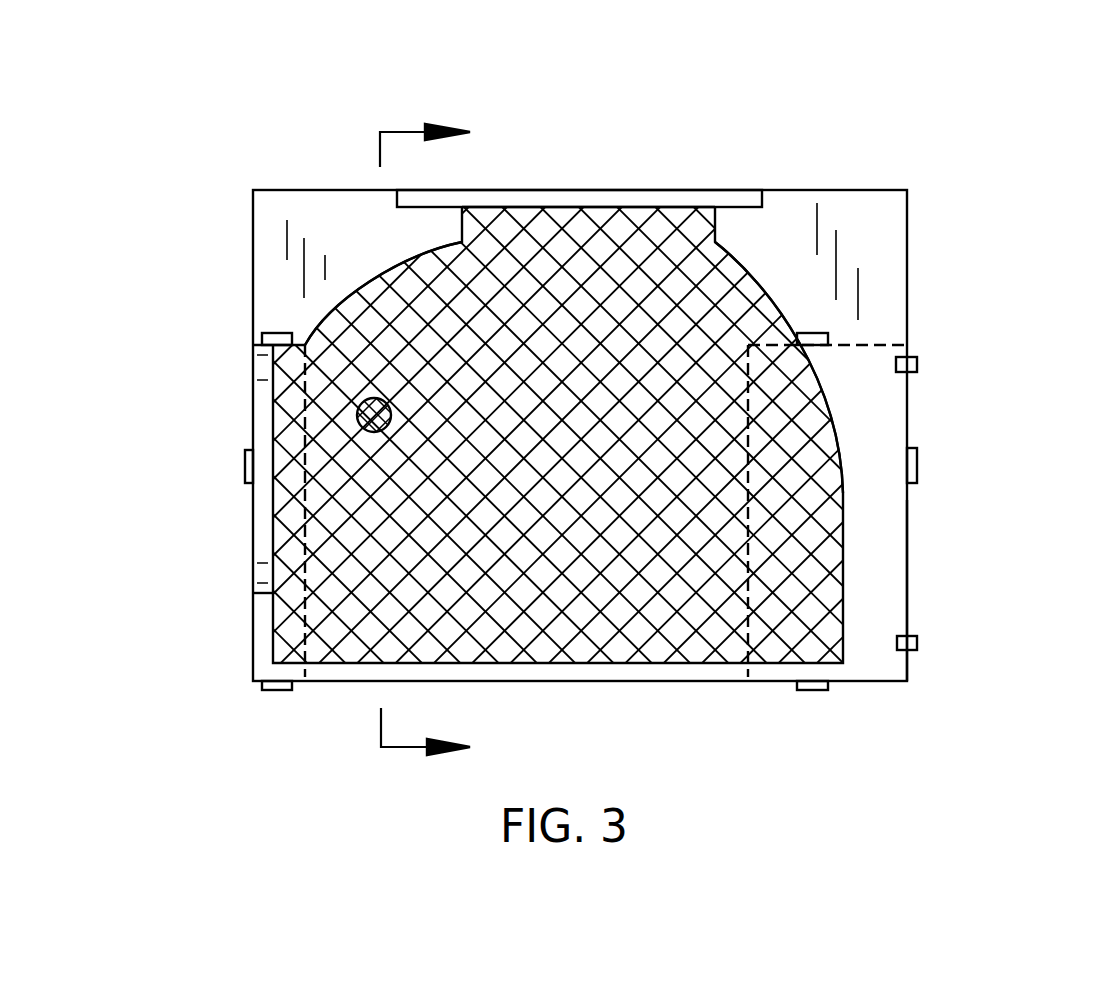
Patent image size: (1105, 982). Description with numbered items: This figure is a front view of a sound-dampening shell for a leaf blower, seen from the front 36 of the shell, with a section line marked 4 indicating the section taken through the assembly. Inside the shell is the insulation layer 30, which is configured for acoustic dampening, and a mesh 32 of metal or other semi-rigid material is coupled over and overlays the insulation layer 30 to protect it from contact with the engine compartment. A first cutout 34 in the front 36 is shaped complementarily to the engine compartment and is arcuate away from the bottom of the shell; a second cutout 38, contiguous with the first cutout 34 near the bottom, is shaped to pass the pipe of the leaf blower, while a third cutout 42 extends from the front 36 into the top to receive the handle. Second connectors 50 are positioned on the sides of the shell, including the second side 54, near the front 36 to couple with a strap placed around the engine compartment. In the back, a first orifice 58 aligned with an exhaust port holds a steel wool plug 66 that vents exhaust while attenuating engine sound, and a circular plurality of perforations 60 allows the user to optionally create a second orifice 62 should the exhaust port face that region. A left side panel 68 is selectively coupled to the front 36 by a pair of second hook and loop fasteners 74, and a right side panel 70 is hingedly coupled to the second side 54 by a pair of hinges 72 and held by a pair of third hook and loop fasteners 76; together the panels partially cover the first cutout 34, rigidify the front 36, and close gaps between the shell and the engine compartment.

The section line 4- 4 is at (431, 439).
The insulation layer 30 is at (642, 590).
The mesh 32 is at (810, 598).
The first cutout 34 is at (665, 290).
The front 36 is at (882, 251).
The second cutout 38 is at (265, 523).
The third cutout 42 is at (599, 190).
The second connectors 50 is at (253, 465).
The second side 54 is at (917, 573).
The first orifice 58 is at (372, 400).
The plurality of perforations 60 is at (808, 438).
The second orifice 62 is at (782, 437).
The plug 66 is at (370, 420).
The left side panel 68 is at (303, 613).
The right side panel 70 is at (866, 343).
The pair of hinges 72 is at (917, 357).
The pair of second hook and loop fasteners 74 is at (273, 333).
The pair of third hook and loop fasteners 76 is at (815, 333).